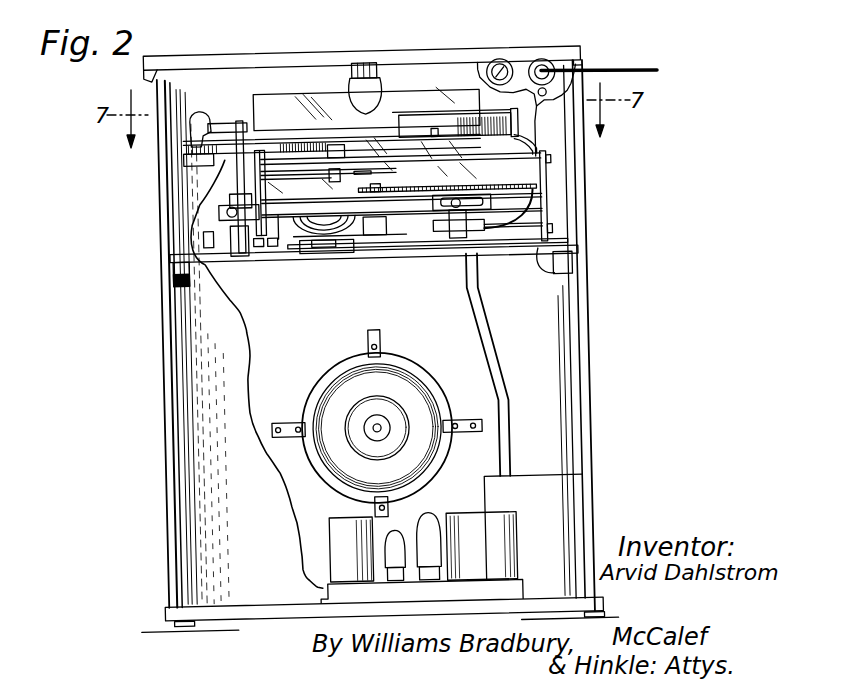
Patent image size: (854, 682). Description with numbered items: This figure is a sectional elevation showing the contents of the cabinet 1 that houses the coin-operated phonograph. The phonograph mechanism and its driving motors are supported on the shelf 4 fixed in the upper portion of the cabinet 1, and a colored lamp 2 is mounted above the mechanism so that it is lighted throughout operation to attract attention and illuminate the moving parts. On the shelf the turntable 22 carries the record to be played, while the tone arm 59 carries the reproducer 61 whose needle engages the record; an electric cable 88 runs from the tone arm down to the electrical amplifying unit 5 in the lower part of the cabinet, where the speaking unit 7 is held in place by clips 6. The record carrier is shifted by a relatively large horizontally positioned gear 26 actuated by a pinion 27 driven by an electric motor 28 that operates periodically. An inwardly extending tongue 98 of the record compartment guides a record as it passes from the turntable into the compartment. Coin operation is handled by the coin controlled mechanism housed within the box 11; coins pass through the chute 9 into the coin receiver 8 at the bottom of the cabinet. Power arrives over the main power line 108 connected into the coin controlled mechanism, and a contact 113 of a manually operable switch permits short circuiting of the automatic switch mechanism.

The cabinet 1 is at (587, 398).
The colored lamp 2 is at (386, 90).
The shelf 4 is at (575, 275).
The electrical amplifying unit 5 is at (456, 522).
The clips 6 is at (330, 352).
The speaking unit 7 is at (422, 379).
The coin receiver 8 is at (548, 534).
The chute 9 is at (503, 420).
The box 11 is at (439, 239).
The turntable 22 is at (282, 150).
The gear 26 is at (544, 194).
The pinion 27 is at (379, 192).
The electric motor 28 is at (356, 219).
The tone arm 59 is at (237, 121).
The reproducer 61 is at (205, 108).
The electric cable 88 is at (241, 309).
The tongue 98 is at (447, 112).
The main power line 108 is at (542, 142).
The contact 113 is at (550, 91).